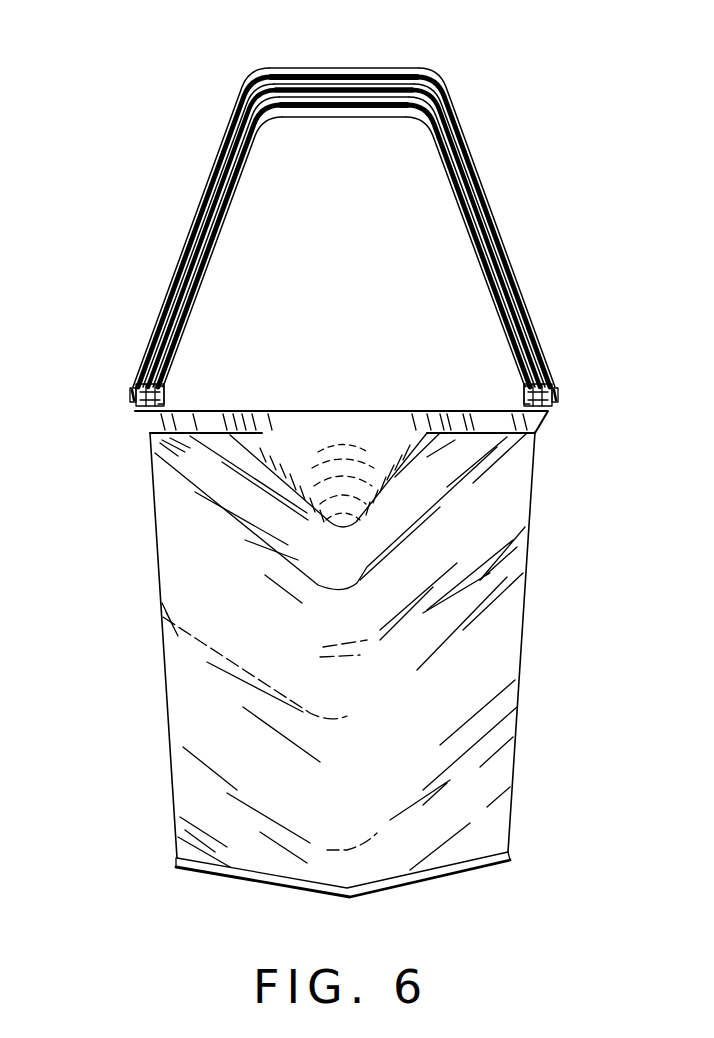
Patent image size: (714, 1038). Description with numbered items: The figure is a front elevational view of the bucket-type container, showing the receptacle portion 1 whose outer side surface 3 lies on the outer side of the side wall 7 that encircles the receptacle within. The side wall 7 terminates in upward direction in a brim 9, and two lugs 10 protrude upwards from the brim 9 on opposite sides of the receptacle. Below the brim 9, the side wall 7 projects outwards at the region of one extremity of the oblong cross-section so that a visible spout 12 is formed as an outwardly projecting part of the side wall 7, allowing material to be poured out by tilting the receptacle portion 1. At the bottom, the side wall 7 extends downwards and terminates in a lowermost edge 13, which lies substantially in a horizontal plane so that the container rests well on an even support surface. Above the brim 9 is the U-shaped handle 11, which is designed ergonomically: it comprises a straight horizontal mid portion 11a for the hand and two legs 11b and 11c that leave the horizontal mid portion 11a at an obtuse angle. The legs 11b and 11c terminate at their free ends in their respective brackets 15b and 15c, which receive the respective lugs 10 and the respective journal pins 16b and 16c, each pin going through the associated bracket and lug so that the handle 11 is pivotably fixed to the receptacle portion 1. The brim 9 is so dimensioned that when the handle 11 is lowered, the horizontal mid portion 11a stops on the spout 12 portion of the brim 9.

The receptacle portion 1 is at (324, 646).
The outer side surface 3 is at (536, 492).
The side wall 7 is at (492, 634).
The brim 9 is at (177, 410).
The lugs 10 is at (130, 397).
The handle 11 is at (338, 196).
The horizontal mid portion 11a is at (366, 66).
The leg 11b is at (505, 242).
The leg 11c is at (197, 231).
The spout 12 is at (373, 430).
The lowermost edge 13 is at (235, 878).
The bracket 15b is at (555, 385).
The bracket 15c is at (133, 388).
The journal pin 16b is at (524, 393).
The journal pin 16c is at (164, 392).